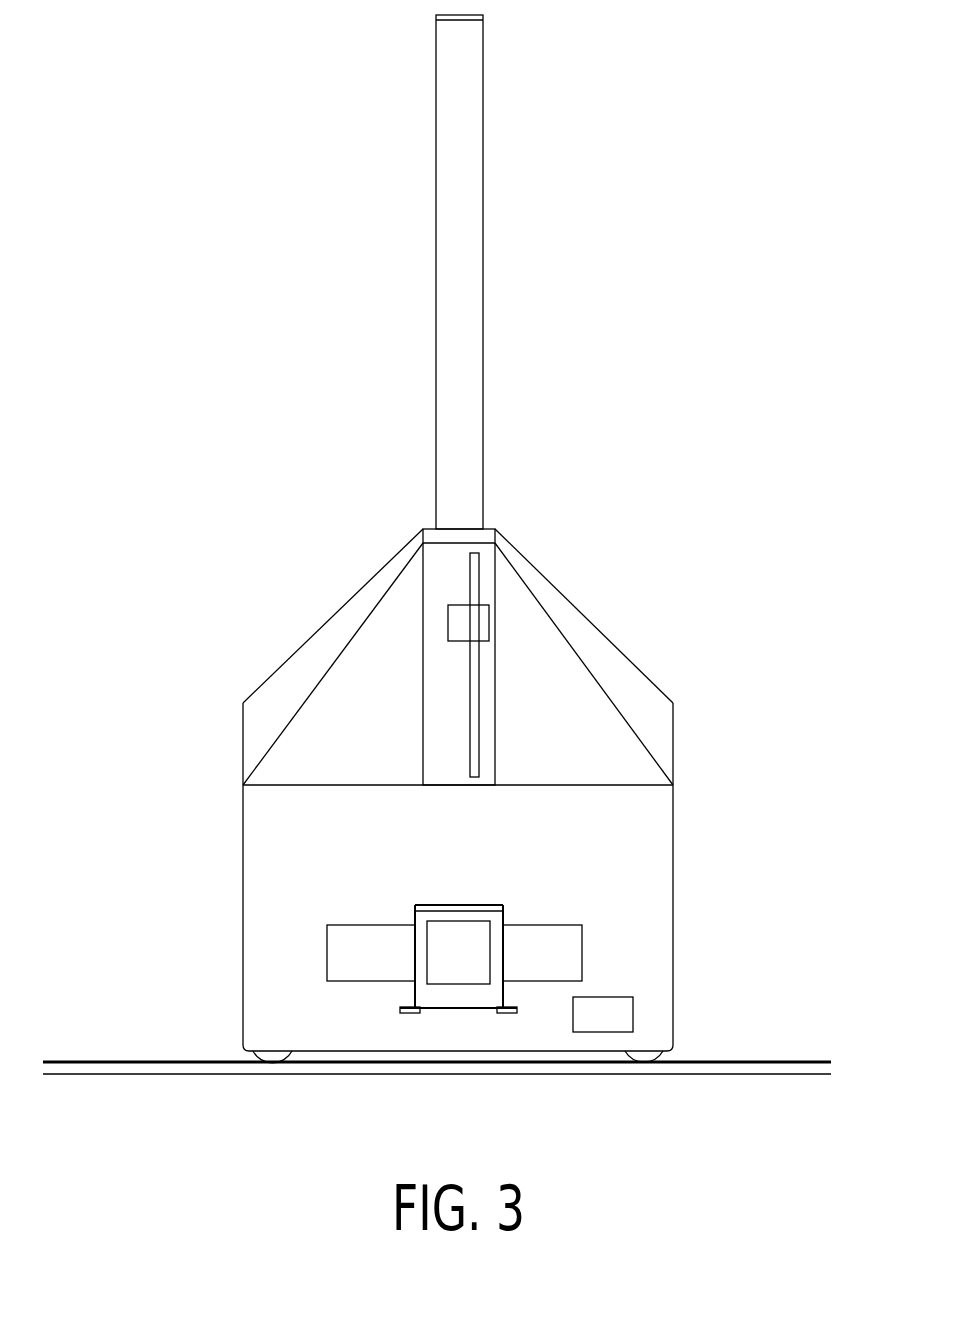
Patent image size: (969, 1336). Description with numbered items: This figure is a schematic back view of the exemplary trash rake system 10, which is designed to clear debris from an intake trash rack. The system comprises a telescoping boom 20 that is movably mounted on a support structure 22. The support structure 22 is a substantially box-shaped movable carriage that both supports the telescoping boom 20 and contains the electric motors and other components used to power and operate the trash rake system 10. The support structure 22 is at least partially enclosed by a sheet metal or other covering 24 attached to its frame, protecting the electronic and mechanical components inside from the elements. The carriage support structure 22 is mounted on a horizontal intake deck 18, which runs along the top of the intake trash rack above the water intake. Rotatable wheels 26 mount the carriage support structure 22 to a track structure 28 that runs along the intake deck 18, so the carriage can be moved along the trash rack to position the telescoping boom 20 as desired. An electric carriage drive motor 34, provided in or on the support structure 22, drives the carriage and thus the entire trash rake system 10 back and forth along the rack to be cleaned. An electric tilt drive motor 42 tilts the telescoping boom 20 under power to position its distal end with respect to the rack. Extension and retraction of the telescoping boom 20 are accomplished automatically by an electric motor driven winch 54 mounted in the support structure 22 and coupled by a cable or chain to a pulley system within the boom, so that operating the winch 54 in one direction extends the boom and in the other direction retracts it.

The trash rake system 10 is at (708, 336).
The intake deck 18 is at (800, 1062).
The telescoping boom 20 is at (490, 271).
The support structure 22 is at (681, 911).
The covering 24 is at (638, 677).
The wheels 26 is at (658, 1053).
The track structure 28 is at (752, 1062).
The carriage drive motor 34 is at (633, 997).
The tilt drive motor 42 is at (458, 603).
The electric motor driven winch 54 is at (557, 925).